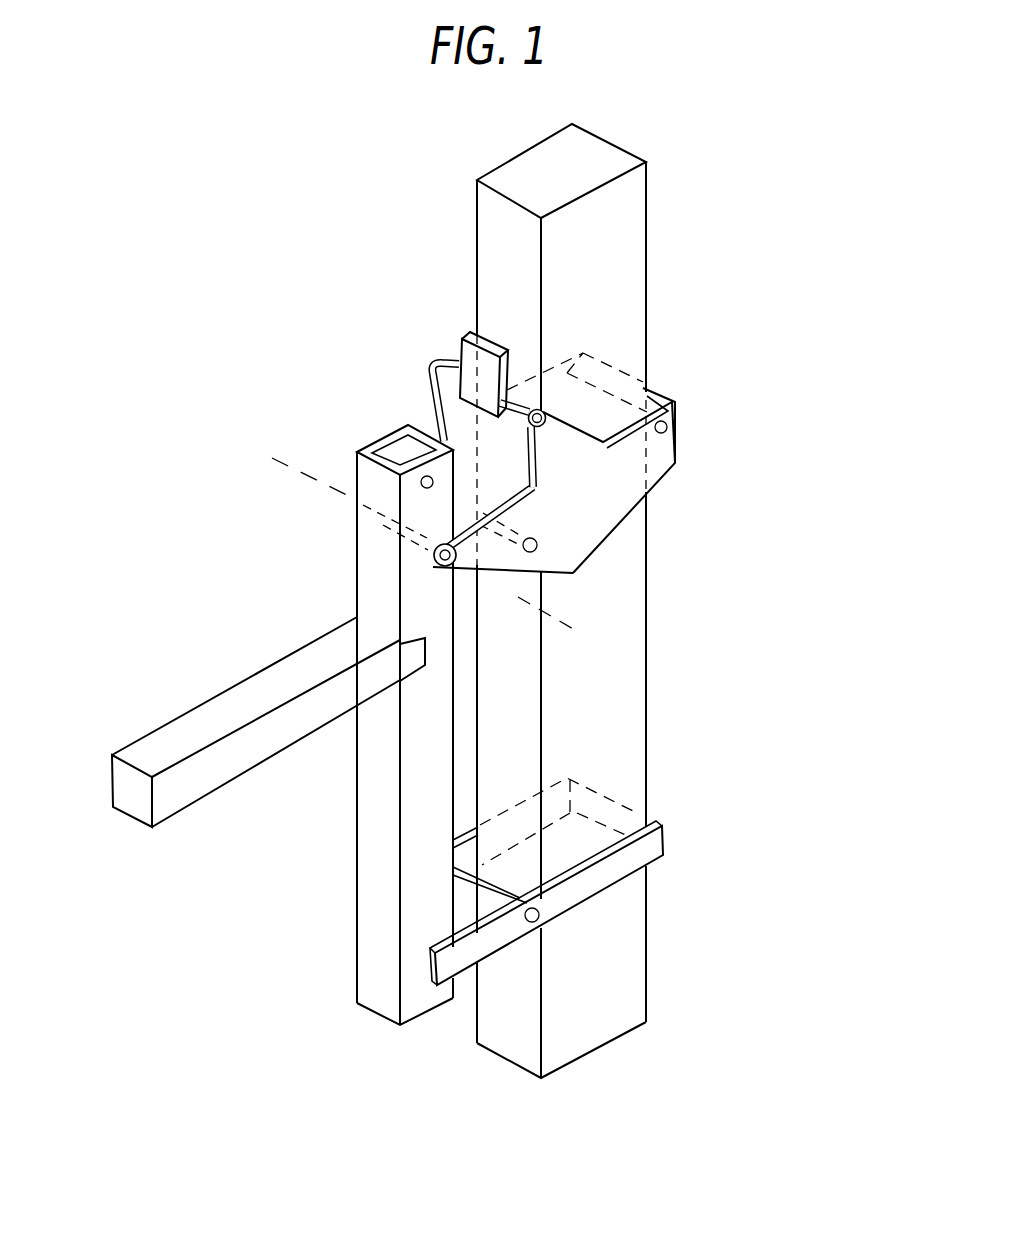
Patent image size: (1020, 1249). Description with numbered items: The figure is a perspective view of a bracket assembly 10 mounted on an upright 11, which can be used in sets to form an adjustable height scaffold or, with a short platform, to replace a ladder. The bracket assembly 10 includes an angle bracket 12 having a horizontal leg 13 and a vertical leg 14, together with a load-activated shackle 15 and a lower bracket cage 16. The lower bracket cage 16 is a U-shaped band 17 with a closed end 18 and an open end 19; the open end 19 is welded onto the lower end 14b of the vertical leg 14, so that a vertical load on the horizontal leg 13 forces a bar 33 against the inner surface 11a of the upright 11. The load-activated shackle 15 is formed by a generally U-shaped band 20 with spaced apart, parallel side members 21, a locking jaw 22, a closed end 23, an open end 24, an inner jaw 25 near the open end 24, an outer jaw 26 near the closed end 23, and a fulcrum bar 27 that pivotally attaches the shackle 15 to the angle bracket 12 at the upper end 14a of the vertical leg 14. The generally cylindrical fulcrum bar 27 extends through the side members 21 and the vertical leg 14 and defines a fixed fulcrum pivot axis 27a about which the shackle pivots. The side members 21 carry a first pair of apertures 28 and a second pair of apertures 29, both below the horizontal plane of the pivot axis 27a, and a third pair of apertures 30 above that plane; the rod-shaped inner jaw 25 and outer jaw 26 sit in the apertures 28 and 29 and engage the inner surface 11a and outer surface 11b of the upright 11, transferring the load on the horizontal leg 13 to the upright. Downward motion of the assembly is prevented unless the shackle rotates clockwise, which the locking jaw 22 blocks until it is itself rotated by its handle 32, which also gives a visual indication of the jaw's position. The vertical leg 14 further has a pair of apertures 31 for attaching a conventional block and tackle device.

The bracket assembly 10 is at (745, 268).
The upright 11 is at (613, 213).
The inner surface of upright 11a is at (490, 710).
The outer surface of upright 11b is at (648, 759).
The angle bracket 12 is at (213, 470).
The horizontal leg 13 is at (157, 740).
The vertical leg 14 is at (374, 833).
The upper end of vertical leg 14a is at (372, 538).
The lower end of vertical leg 14b is at (372, 980).
The load-activated shackle 15 is at (685, 450).
The lower bracket cage 16 is at (688, 848).
The U-shaped band 17 is at (590, 900).
The closed end of band 18 is at (648, 826).
The open end of band 19 is at (430, 970).
The U-shaped band 20 is at (593, 555).
The side members 21 is at (617, 460).
The locking jaw 22 is at (443, 370).
The closed end of shackle band 23 is at (662, 390).
The open end of shackle band 24 is at (430, 557).
The inner jaw 25 is at (500, 521).
The outer jaw 26 is at (645, 380).
The fulcrum bar 27 is at (355, 530).
The fulcrum pivot axis 27a is at (600, 643).
The first pair of apertures 28 is at (550, 575).
The second pair of apertures 29 is at (667, 427).
The third pair of apertures 30 is at (545, 410).
The pair of apertures 31 is at (425, 477).
The handle 32 is at (458, 345).
The bar 33 is at (487, 893).